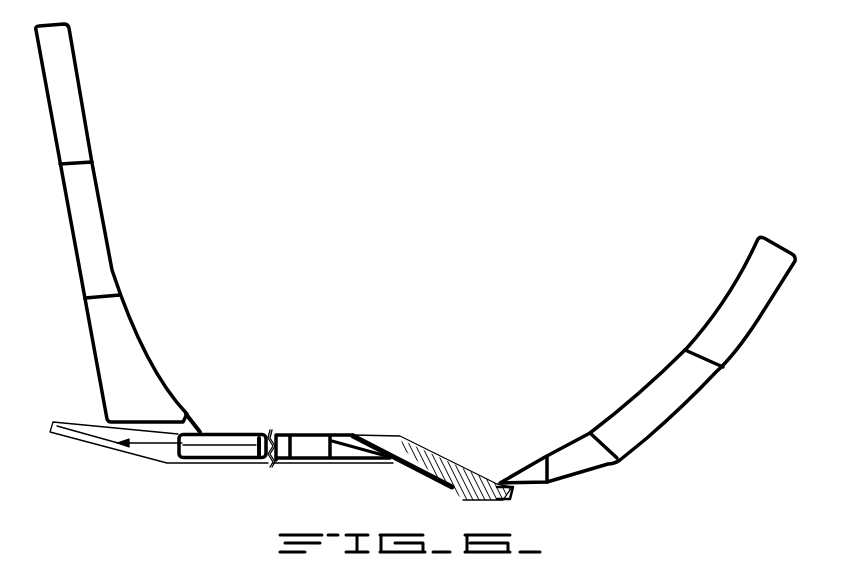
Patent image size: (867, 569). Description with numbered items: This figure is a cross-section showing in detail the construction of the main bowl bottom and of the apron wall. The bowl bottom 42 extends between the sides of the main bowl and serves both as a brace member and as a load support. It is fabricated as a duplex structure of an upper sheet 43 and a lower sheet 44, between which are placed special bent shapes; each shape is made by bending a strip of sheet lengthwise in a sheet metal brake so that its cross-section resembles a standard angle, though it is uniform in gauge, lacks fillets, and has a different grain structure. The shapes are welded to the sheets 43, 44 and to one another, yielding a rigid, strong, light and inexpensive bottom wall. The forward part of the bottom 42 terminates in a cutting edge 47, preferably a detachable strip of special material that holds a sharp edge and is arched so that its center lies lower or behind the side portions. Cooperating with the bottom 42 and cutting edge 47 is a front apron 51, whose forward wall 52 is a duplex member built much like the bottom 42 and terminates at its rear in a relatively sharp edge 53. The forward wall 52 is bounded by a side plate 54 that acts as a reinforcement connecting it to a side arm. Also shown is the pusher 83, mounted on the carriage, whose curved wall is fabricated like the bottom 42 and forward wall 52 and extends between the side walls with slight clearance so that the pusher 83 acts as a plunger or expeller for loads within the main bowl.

The bowl bottom 42 is at (333, 447).
The upper sheet 43 is at (222, 448).
The lower sheet 44 is at (254, 460).
The cutting edge 47 is at (477, 492).
The front apron 51 is at (647, 360).
The forward wall 52 is at (690, 352).
The sharp edge 53 is at (517, 488).
The side plate 54 is at (127, 313).
The pusher 83 is at (122, 228).